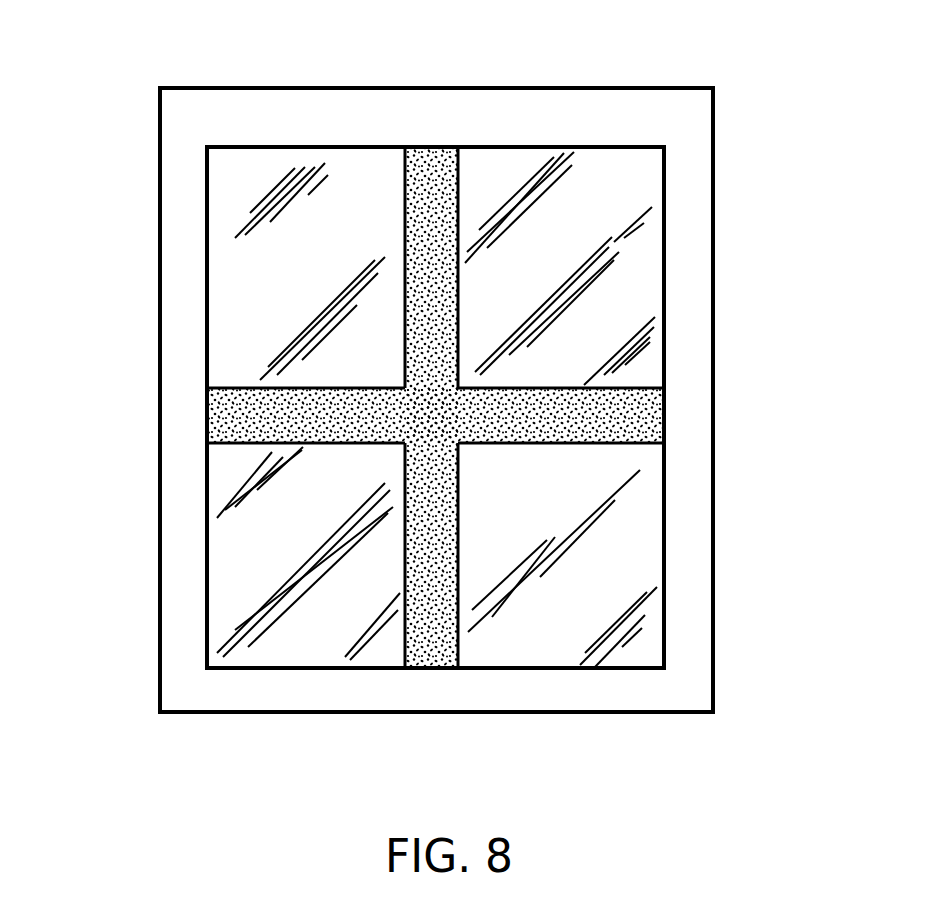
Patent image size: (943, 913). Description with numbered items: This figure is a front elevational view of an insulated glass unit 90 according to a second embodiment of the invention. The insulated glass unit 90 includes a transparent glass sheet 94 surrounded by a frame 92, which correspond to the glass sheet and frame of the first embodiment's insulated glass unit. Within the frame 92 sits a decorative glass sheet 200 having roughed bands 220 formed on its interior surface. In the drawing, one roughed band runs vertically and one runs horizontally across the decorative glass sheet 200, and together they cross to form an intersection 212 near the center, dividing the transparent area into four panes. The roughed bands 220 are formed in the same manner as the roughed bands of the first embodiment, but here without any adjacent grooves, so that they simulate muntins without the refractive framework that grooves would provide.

The insulated glass unit 90 is at (133, 328).
The frame 92 is at (180, 650).
The transparent glass sheet 94 is at (226, 583).
The decorative glass sheet 200 is at (666, 278).
The intersection 212 is at (465, 450).
The roughed bands 220 is at (444, 156).